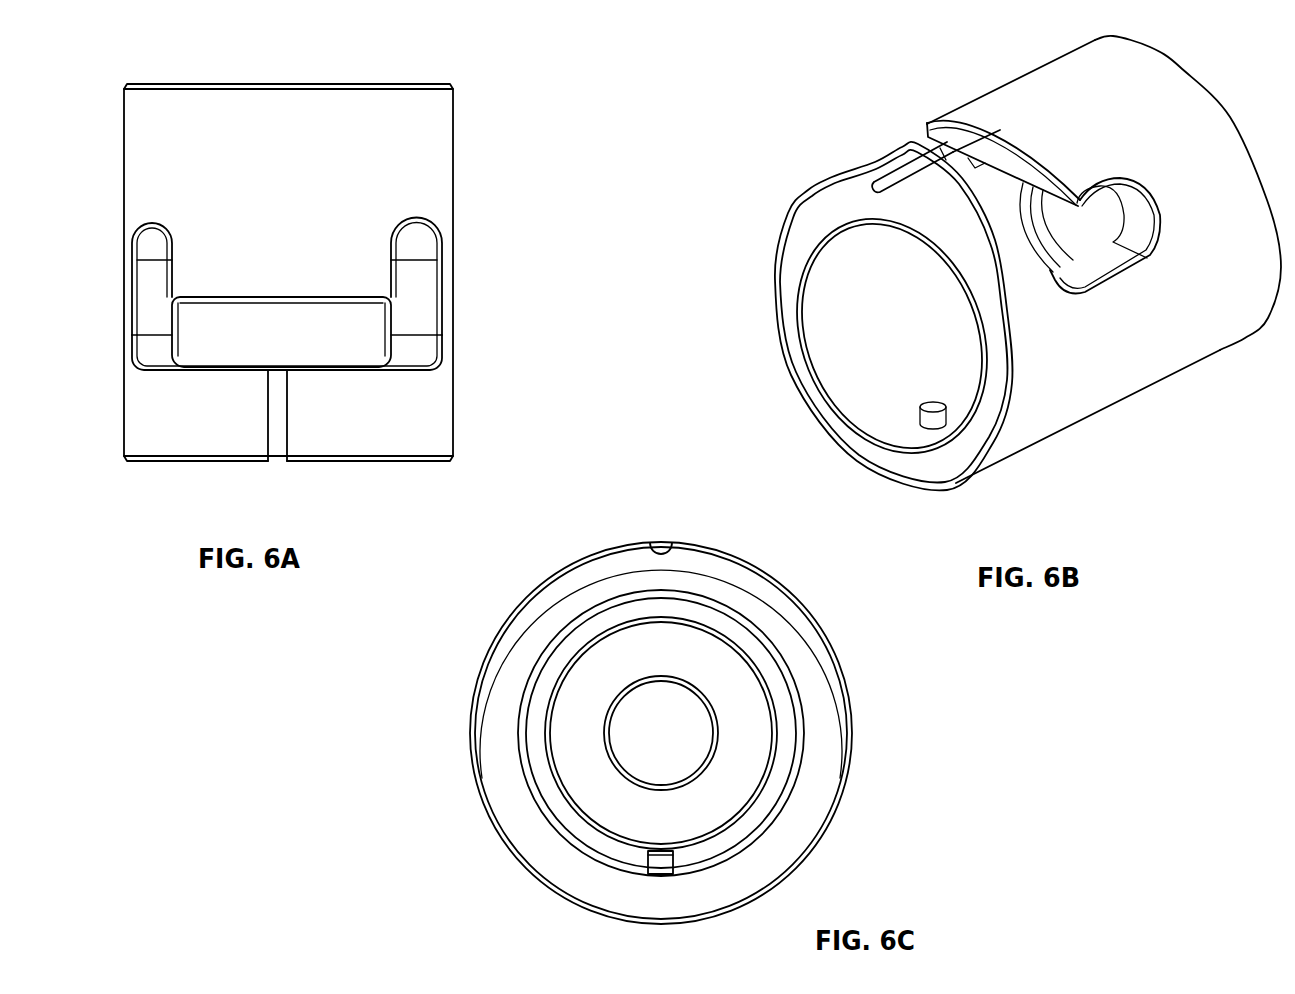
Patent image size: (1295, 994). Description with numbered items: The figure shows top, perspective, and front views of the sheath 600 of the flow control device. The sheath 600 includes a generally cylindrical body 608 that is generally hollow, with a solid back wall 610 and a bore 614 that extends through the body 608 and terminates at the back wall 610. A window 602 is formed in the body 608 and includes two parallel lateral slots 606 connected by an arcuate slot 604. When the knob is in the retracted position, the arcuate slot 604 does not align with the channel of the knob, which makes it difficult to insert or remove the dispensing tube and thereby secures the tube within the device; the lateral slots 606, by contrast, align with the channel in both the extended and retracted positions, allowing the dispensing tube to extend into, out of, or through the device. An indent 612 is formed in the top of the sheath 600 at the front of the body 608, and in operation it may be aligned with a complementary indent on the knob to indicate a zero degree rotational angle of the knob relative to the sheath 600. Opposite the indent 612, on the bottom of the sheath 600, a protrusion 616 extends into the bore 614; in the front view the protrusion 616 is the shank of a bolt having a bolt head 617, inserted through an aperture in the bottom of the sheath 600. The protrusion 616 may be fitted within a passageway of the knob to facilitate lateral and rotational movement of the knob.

In FIG. 6A, the sheath 600 is at (148, 62).
In FIG. 6B, the sheath 600 is at (788, 108).
In FIG. 6C, the sheath 600 is at (607, 522).
In FIG. 6A, the window 602 is at (330, 292).
In FIG. 6B, the window 602 is at (932, 117).
In FIG. 6A, the arcuate slot 604 is at (190, 372).
In FIG. 6B, the arcuate slot 604 is at (925, 140).
In FIG. 6A, the lateral slots 606 is at (158, 290).
In FIG. 6B, the lateral slots 606 is at (1122, 278).
In FIG. 6A, the body 608 is at (418, 160).
In FIG. 6B, the body 608 is at (1190, 328).
In FIG. 6A, the back wall 610 is at (193, 84).
In FIG. 6C, the back wall 610 is at (600, 677).
In FIG. 6A, the indent 612 is at (280, 422).
In FIG. 6B, the indent 612 is at (878, 181).
In FIG. 6C, the indent 612 is at (664, 541).
In FIG. 6B, the bore 614 is at (868, 320).
In FIG. 6C, the bore 614 is at (578, 727).
In FIG. 6B, the protrusion 616 is at (920, 412).
In FIG. 6C, the protrusion 616 is at (677, 861).
In FIG. 6C, the bolt head 617 is at (660, 926).